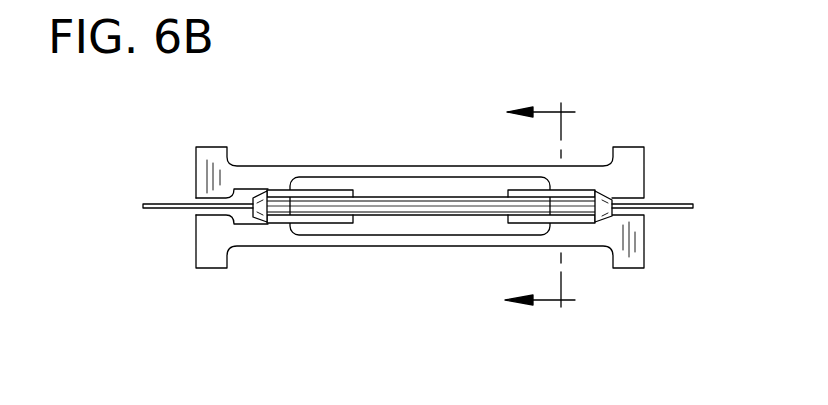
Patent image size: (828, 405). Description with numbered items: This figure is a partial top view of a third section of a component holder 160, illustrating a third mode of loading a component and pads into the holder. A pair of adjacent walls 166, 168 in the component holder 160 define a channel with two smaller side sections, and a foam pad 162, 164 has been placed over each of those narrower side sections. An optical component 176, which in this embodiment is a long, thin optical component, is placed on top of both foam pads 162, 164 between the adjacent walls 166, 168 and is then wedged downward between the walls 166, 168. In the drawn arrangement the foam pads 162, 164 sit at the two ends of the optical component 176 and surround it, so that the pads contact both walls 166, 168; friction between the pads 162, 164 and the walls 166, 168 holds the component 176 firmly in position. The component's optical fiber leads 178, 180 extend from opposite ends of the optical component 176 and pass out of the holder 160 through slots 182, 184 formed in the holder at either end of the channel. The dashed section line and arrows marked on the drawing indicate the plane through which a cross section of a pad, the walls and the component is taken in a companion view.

The component holder 160 is at (641, 94).
The foam pad 162 is at (278, 220).
The foam pad 164 is at (583, 225).
The adjacent wall 166 is at (338, 166).
The adjacent wall 168 is at (373, 248).
The optical component 176 is at (444, 208).
The optical fiber lead 178 is at (157, 210).
The optical fiber lead 180 is at (680, 210).
The slot 182 is at (192, 198).
The slot 184 is at (633, 200).